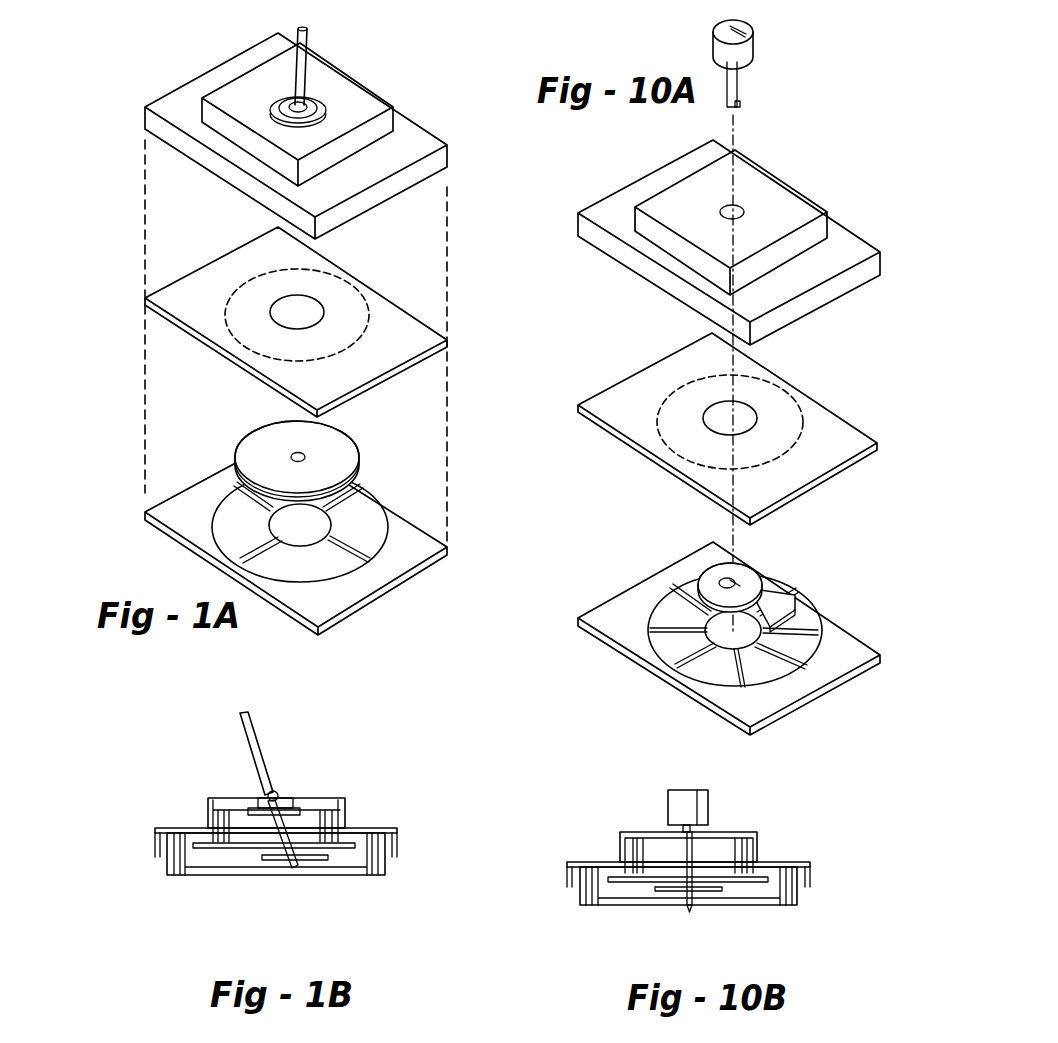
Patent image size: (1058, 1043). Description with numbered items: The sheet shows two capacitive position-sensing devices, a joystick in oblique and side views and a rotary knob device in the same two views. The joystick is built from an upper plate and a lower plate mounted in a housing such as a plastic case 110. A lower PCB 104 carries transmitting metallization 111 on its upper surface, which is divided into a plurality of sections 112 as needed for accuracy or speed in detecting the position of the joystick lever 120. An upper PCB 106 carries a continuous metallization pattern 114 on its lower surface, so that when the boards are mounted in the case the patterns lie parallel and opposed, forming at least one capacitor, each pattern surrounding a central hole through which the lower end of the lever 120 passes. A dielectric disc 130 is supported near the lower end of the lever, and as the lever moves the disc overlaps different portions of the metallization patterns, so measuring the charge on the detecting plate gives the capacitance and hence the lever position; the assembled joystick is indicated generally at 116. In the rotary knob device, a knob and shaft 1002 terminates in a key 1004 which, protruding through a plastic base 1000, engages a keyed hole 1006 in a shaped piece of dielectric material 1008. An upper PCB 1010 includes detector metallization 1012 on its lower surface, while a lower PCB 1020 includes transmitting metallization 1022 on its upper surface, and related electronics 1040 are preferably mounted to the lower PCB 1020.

In FIG. 1B, the lower PCB 104 is at (268, 873).
In FIG. 1A, the upper PCB 106 is at (192, 316).
In FIG. 1B, the upper PCB 106 is at (208, 850).
In FIG. 1A, the plastic case 110 is at (200, 185).
In FIG. 1A, the transmitting metallization 111 is at (237, 500).
In FIG. 1A, the sections of transmitting metallization 112 is at (338, 563).
In FIG. 1A, the metallization pattern 114 is at (285, 348).
In FIG. 1B, the joystick switch assembly 116 is at (229, 831).
In FIG. 1A, the joystick lever 120 is at (308, 37).
In FIG. 1B, the joystick lever 120 is at (253, 740).
In FIG. 1A, the dielectric disc 130 is at (335, 453).
In FIG. 1B, the dielectric disc 130 is at (317, 860).
In FIG. 10A, the plastic base 1000 is at (615, 295).
In FIG. 10B, the plastic base 1000 is at (664, 874).
In FIG. 10A, the knob and shaft 1002 is at (768, 63).
In FIG. 10B, the knob and shaft 1002 is at (685, 798).
In FIG. 10A, the key 1004 is at (742, 103).
In FIG. 10A, the keyed hole 1006 is at (787, 583).
In FIG. 10A, the shaped piece of dielectric material 1008 is at (793, 598).
In FIG. 10B, the shaped piece of dielectric material 1008 is at (715, 890).
In FIG. 10A, the upper PCB 1010 is at (694, 429).
In FIG. 10B, the upper PCB 1010 is at (747, 882).
In FIG. 10A, the detector metallization 1012 is at (717, 453).
In FIG. 10A, the lower PCB 1020 is at (707, 634).
In FIG. 10B, the lower PCB 1020 is at (630, 902).
In FIG. 10A, the transmitting metallization 1022 is at (670, 607).
In FIG. 10A, the related electronics 1040 is at (833, 645).
In FIG. 10B, the related electronics 1040 is at (685, 912).